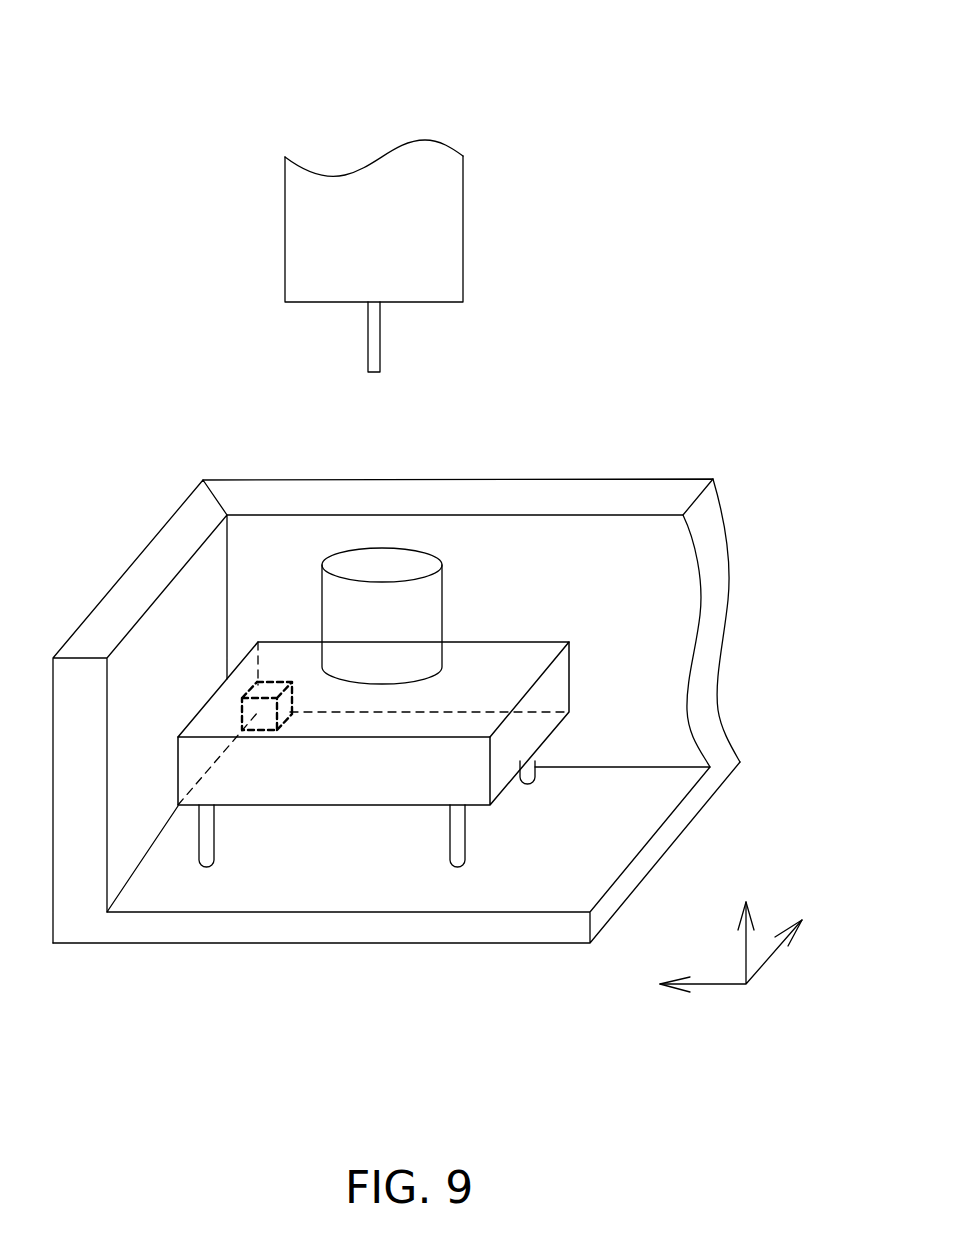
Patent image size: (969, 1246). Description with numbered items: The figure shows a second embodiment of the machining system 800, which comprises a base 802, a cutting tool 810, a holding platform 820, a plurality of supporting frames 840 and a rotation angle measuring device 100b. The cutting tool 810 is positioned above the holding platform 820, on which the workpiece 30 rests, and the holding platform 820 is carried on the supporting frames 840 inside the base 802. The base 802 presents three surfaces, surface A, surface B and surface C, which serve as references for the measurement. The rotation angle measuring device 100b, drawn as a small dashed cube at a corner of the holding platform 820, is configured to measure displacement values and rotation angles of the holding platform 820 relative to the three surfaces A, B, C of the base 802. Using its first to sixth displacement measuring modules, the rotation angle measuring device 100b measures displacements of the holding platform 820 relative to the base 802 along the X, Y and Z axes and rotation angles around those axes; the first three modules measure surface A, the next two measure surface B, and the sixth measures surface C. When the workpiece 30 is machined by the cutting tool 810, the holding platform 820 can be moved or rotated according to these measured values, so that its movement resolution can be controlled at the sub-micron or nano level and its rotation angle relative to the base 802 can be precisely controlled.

The machining system 800 is at (616, 98).
The cutting tool 810 is at (376, 342).
The base 802 is at (717, 518).
The surface A is at (187, 597).
The surface B is at (680, 648).
The surface C is at (278, 890).
The holding platform 820 is at (378, 792).
The supporting frames 840 is at (206, 853).
The workpiece 30 is at (425, 600).
The rotation angle measuring device 100b is at (270, 690).